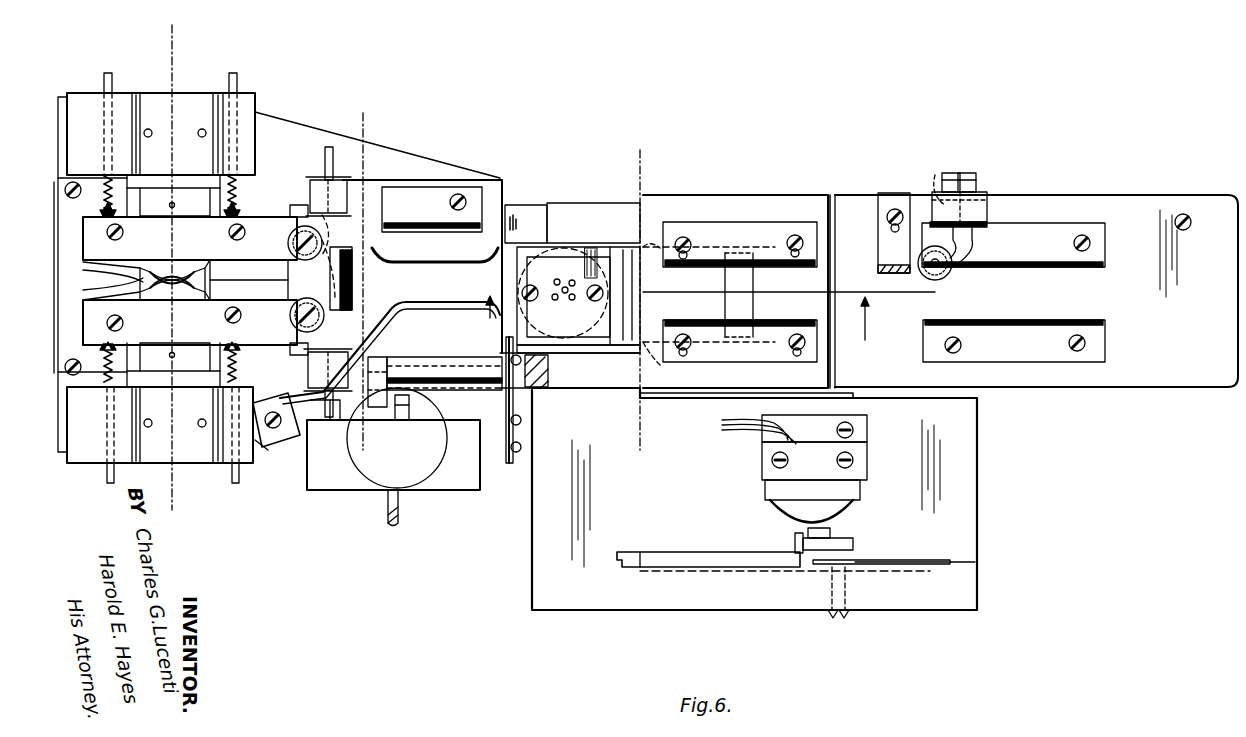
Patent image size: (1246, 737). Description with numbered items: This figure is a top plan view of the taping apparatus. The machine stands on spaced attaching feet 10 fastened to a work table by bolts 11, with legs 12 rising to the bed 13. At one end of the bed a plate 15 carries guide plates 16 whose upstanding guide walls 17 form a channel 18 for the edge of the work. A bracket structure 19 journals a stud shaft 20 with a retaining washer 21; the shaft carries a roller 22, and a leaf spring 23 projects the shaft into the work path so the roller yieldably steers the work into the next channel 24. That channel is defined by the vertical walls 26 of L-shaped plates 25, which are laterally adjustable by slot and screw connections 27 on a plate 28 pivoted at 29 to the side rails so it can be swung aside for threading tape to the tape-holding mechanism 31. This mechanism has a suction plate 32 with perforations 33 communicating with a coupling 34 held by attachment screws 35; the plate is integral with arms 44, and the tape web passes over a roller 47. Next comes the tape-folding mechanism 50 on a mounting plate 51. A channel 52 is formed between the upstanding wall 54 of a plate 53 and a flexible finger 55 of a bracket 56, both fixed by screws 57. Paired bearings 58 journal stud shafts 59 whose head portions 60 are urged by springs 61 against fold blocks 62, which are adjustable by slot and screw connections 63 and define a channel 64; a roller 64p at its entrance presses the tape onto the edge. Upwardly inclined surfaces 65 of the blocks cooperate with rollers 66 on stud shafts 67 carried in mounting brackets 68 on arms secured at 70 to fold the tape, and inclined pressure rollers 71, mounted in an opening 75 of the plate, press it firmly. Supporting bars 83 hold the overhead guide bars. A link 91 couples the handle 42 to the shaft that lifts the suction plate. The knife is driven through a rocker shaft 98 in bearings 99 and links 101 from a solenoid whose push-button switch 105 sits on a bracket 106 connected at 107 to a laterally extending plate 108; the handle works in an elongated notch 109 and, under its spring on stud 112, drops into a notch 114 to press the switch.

The attaching feet 10 is at (170, 77).
The bolts 11 is at (370, 133).
The legs 12 is at (676, 328).
The bed 13 is at (643, 165).
The plate 15 is at (1137, 210).
The guide plates 16 is at (1013, 292).
The guide walls 17 is at (1023, 268).
The channel 18 is at (1010, 310).
The bracket structure 19 is at (978, 202).
The stud shaft 20 is at (935, 175).
The retaining washer 21 is at (968, 173).
The roller 22 is at (948, 280).
The leaf spring 23 is at (950, 173).
The channel 24 is at (777, 283).
The L-shaped plates 25 is at (730, 292).
The vertical walls 26 is at (797, 267).
The slot and screw connections 27 is at (688, 240).
The plate 28 is at (665, 208).
The pivotal connection 29 is at (840, 193).
The tape-holding mechanism 31 is at (528, 258).
The suction plate 32 is at (590, 245).
The perforations 33 is at (557, 300).
The coupling 34 is at (580, 245).
The attachment screws 35 is at (535, 300).
The handle 42 is at (890, 560).
The arms 44 is at (648, 245).
The roller 47 is at (722, 292).
The tape-folding mechanism 50 is at (435, 168).
The mounting plate 51 is at (305, 124).
The channel 52 is at (440, 283).
The plate 53 is at (432, 209).
The upstanding wall 54 is at (418, 262).
The flexible finger 55 is at (440, 312).
The bracket 56 is at (292, 433).
The screws 57 is at (462, 198).
The bearings 58 is at (85, 106).
The stud shafts 59 is at (108, 72).
The head portions 60 is at (110, 212).
The springs 61 is at (106, 200).
The fold blocks 62 is at (190, 281).
The slot and screw connections 63 is at (232, 232).
The channel 64 is at (258, 240).
The roller 64p is at (348, 283).
The upwardly inclined surfaces 65 is at (272, 262).
The rollers 66 is at (350, 225).
The stud shafts 67 is at (325, 165).
The mounting brackets 68 is at (347, 195).
The securing connection 70 is at (282, 350).
The pressure rollers 71 is at (98, 270).
The opening 75 is at (98, 296).
The supporting bars 83 is at (535, 395).
The link 91 is at (743, 572).
The rocker shaft 98 is at (440, 362).
The bearings 99 is at (375, 358).
The links 101 is at (422, 425).
The push-button switch 105 is at (835, 538).
The bracket 106 is at (867, 462).
The connection 107 is at (855, 430).
The laterally extending plate 108 is at (532, 540).
The elongated notch 109 is at (688, 565).
The stud 112 is at (850, 614).
The notch 114 is at (795, 540).